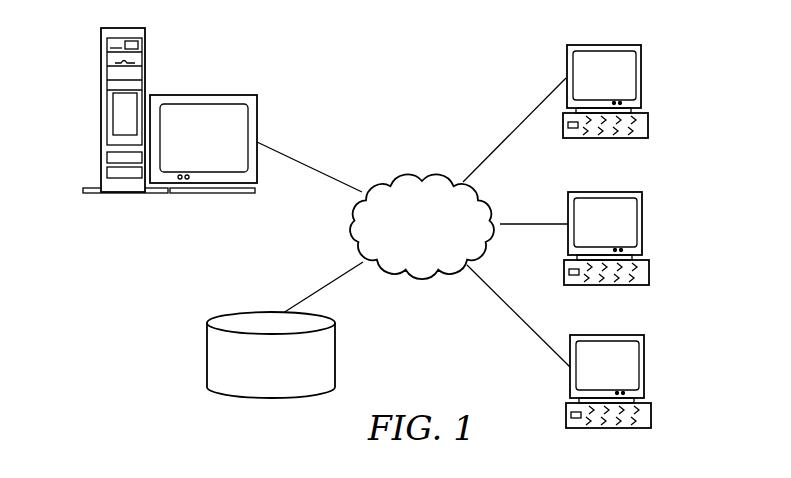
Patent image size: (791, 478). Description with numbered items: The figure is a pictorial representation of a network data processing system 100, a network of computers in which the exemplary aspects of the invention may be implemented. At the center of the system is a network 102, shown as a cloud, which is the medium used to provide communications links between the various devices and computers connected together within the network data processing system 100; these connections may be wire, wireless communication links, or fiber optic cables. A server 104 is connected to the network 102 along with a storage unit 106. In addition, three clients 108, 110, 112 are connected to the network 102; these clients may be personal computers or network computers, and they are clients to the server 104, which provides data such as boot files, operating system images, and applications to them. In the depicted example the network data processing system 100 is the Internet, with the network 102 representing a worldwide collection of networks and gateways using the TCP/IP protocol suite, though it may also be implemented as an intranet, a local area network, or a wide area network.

The network data processing system 100 is at (475, 55).
The network 102 is at (392, 175).
The server 104 is at (102, 112).
The storage unit 106 is at (207, 352).
The client 108 is at (641, 78).
The client 110 is at (642, 223).
The client 112 is at (644, 370).